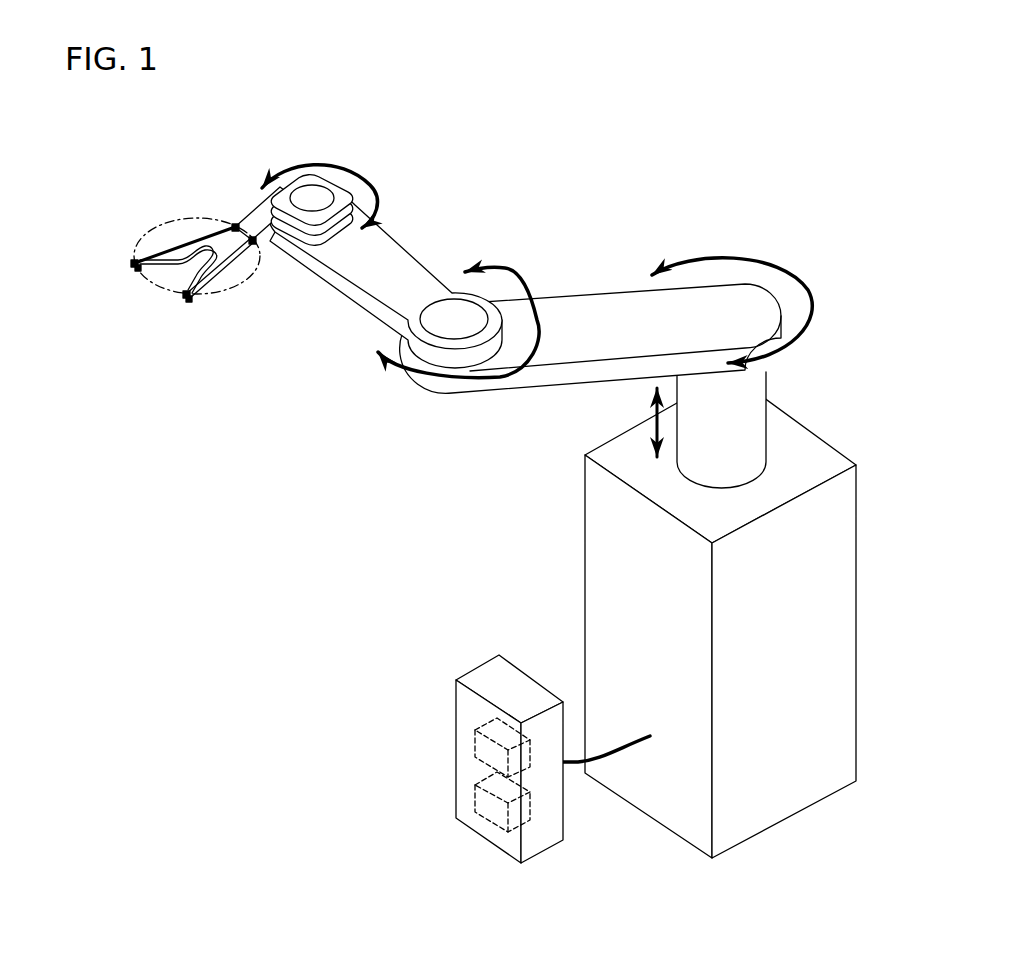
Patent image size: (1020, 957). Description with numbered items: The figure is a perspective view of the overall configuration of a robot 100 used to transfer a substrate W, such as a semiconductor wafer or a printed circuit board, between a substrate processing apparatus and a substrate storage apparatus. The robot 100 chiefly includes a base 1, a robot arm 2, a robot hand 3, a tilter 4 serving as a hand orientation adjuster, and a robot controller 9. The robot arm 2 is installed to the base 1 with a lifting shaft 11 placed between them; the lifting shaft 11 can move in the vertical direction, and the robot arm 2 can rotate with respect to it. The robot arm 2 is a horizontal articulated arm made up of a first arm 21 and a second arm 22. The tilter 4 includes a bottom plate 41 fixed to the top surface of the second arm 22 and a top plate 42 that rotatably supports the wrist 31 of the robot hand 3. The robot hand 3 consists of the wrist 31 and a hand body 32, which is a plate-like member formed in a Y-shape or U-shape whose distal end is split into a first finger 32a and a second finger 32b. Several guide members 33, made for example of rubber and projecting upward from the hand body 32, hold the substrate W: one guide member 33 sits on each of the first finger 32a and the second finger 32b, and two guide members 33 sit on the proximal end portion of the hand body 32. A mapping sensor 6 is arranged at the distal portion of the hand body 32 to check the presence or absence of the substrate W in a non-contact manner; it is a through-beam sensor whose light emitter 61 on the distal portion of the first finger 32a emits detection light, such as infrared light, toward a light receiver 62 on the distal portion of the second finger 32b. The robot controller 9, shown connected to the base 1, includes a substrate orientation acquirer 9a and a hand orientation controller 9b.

The robot 100 is at (783, 190).
The base 1 is at (686, 614).
The lifting shaft 11 is at (742, 395).
The robot arm 2 is at (540, 334).
The first arm 21 is at (532, 373).
The second arm 22 is at (352, 298).
The robot hand 3 is at (193, 249).
The wrist 31 is at (253, 228).
The hand body 32 is at (181, 271).
The first finger 32a is at (195, 303).
The second finger 32b is at (152, 252).
The guide member 33 is at (235, 227).
The tilter 4 is at (368, 178).
The bottom plate 41 is at (377, 198).
The top plate 42 is at (311, 186).
The mapping sensor 6 is at (140, 343).
The light emitter 61 is at (185, 301).
The light receiver 62 is at (137, 269).
The robot controller 9 is at (447, 759).
The substrate orientation acquirer 9a is at (475, 738).
The hand orientation controller 9b is at (475, 802).
The substrate W is at (241, 292).